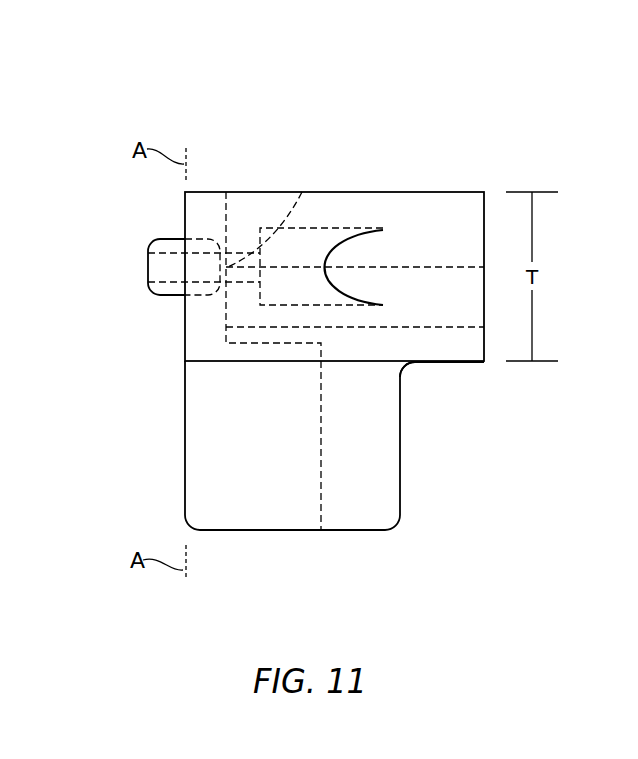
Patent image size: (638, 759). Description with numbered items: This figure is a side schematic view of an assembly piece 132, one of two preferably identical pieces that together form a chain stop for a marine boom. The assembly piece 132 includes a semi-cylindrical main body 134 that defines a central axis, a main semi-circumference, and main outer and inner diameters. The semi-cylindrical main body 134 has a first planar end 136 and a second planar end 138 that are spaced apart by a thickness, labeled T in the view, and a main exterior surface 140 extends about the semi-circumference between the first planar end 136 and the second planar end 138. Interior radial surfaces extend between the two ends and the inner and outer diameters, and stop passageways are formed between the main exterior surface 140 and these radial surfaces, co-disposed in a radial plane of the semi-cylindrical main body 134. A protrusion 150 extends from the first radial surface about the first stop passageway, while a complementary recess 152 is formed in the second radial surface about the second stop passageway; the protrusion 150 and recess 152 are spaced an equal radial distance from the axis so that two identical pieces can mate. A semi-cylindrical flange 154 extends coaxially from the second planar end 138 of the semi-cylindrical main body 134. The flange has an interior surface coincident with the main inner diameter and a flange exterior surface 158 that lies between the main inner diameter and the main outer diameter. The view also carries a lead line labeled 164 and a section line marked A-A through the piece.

The assembly piece 132 is at (380, 83).
The semi-cylindrical main body 134 is at (352, 208).
The first planar end 136 is at (264, 192).
The second planar end 138 is at (447, 364).
The main exterior surface 140 is at (460, 305).
The protrusion 150 is at (168, 239).
The recess 152 is at (202, 298).
The semi-cylindrical flange 154 is at (212, 442).
The flange exterior surface 158 is at (273, 514).
The bore 164 is at (425, 267).